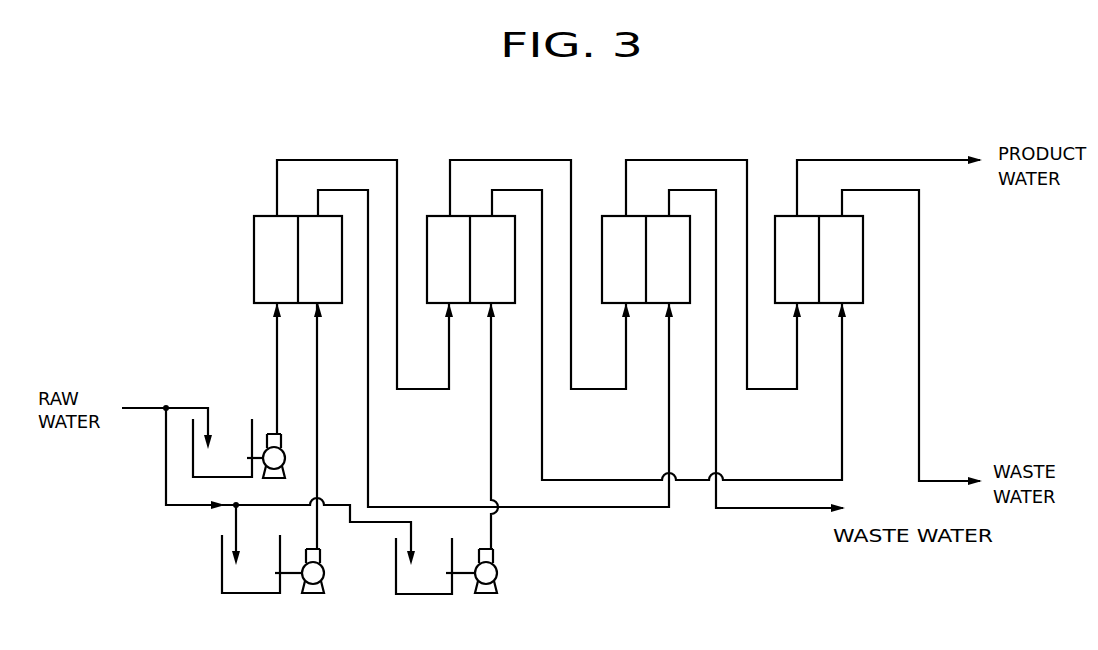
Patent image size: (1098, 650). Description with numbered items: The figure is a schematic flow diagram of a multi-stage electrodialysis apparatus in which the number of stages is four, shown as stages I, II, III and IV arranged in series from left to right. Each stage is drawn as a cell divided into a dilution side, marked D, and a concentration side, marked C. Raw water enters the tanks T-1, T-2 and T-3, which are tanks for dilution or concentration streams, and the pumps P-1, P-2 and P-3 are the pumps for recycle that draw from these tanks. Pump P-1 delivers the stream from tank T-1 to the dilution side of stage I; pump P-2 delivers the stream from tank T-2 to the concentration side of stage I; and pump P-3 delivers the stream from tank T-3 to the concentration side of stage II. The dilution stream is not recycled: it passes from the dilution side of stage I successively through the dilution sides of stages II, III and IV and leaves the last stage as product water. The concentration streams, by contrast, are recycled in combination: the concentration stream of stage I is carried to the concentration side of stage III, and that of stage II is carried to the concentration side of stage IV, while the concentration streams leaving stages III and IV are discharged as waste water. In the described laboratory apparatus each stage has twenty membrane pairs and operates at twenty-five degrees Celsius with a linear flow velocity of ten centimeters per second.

The first stage I is at (298, 205).
The second stage II is at (471, 205).
The third stage III is at (646, 205).
The fourth stage IV is at (819, 205).
The tank T-1 is at (222, 460).
The tank T-2 is at (251, 577).
The tank T-3 is at (424, 579).
The pump P-1 is at (273, 402).
The pump P-2 is at (315, 448).
The pump P-3 is at (487, 448).